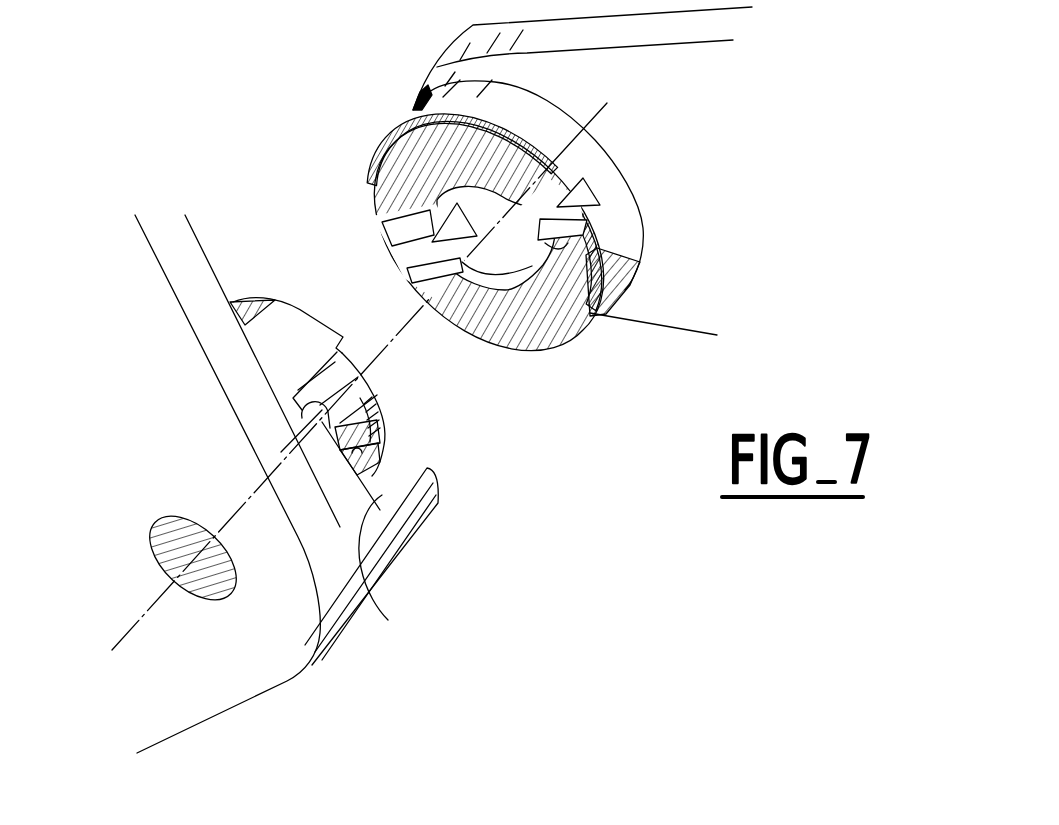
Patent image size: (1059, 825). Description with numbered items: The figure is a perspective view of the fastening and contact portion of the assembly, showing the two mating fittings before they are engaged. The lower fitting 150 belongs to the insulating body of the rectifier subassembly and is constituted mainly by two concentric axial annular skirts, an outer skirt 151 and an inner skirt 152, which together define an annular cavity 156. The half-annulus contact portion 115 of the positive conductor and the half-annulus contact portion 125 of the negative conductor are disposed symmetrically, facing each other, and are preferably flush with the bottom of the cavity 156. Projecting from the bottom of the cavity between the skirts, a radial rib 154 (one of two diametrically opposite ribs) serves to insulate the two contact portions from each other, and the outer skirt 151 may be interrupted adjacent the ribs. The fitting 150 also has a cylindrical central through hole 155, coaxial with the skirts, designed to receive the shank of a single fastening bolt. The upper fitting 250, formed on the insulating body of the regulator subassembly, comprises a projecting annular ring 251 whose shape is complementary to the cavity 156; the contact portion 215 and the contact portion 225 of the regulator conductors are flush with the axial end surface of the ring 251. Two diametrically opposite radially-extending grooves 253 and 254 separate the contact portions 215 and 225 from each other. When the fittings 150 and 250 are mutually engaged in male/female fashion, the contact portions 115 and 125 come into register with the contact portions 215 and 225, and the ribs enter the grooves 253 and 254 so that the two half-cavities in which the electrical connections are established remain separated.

The fitting 250 is at (392, 60).
The projecting annular ring 251 is at (593, 163).
The contact portion 215 is at (390, 172).
The contact portion 225 is at (573, 335).
The radially-extending groove 254 is at (597, 260).
The radially-extending groove 253 is at (430, 252).
The fitting 150 is at (447, 575).
The contact portion 115 is at (293, 398).
The cylindrical central through hole 155 is at (153, 560).
The outer skirt 151 is at (262, 303).
The annular cavity 156 is at (297, 340).
The inner skirt 152 is at (390, 398).
The contact portion 125 is at (393, 500).
The radial rib 154 is at (398, 581).